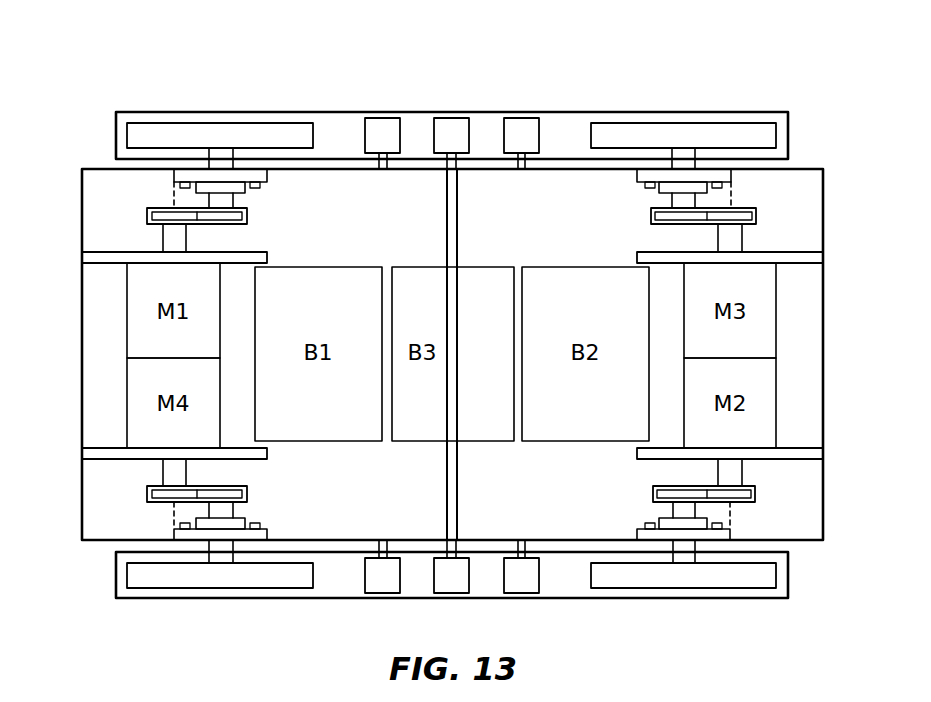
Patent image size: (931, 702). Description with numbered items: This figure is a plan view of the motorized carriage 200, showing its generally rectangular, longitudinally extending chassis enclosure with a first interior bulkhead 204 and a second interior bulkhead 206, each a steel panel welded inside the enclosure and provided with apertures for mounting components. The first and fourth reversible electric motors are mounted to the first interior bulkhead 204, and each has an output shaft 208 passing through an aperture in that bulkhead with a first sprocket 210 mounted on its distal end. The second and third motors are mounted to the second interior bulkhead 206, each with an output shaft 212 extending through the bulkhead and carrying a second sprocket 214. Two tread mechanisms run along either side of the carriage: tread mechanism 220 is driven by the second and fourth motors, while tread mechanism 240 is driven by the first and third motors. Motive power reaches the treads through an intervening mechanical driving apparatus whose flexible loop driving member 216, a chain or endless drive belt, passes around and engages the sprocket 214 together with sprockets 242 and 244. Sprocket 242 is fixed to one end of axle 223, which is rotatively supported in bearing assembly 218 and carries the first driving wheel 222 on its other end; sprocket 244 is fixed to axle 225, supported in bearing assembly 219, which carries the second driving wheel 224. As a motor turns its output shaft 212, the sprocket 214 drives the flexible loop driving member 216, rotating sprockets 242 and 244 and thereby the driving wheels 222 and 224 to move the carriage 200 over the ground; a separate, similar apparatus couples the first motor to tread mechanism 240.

The motorized carriage 200 is at (775, 82).
The first interior bulkhead 204 is at (97, 264).
The second interior bulkhead 206 is at (807, 447).
The output shaft 208 is at (163, 240).
The first sprocket 210 is at (160, 208).
The output shaft 212 is at (743, 474).
The second sprocket 214 is at (747, 503).
The flexible loop driving member 216 is at (683, 485).
The bearing assembly 218 is at (194, 517).
The bearing assembly 219 is at (658, 518).
The tread mechanism 220 is at (94, 576).
The first driving wheel 222 is at (189, 589).
The axle 223 is at (234, 509).
The second driving wheel 224 is at (653, 589).
The axle 225 is at (670, 508).
The tread mechanism 240 is at (95, 128).
The sprocket 242 is at (247, 494).
The sprocket 244 is at (653, 495).